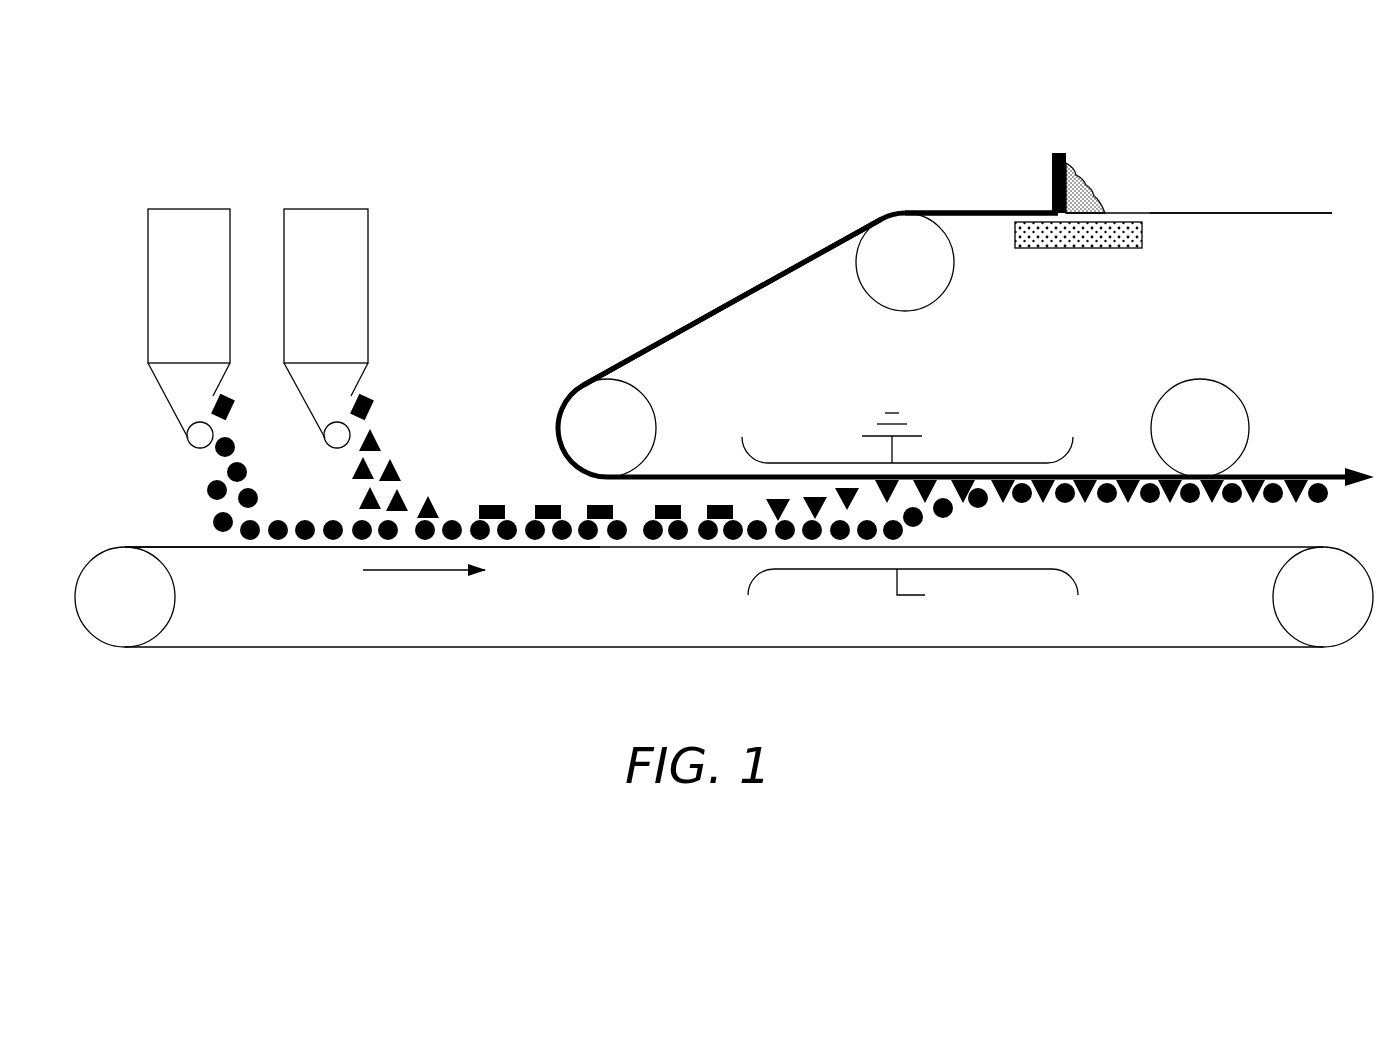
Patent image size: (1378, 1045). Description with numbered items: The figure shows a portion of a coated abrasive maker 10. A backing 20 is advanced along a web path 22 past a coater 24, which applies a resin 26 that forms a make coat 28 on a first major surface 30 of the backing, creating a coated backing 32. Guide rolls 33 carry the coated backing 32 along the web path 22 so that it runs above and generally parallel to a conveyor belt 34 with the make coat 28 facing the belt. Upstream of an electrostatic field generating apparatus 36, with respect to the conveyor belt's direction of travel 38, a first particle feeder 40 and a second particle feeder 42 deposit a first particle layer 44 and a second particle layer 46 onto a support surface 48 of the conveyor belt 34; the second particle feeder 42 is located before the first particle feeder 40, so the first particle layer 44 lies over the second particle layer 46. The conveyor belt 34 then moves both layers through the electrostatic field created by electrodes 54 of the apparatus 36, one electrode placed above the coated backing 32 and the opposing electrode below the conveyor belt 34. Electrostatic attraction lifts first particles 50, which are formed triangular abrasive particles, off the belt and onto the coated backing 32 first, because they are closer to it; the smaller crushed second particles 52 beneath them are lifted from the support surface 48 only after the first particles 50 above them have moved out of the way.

The coated abrasive maker 10 is at (416, 98).
The backing 20 is at (1305, 211).
The web path 22 is at (752, 268).
The coater 24 is at (1059, 152).
The resin 26 is at (1082, 194).
The make coat 28 is at (975, 209).
The first major surface 30 is at (1208, 211).
The coated backing 32 is at (671, 332).
The guide rolls 33 is at (591, 445).
The conveyor belt 34 is at (236, 648).
The electrostatic field generating apparatus 36 is at (806, 447).
The direction of travel 38 is at (426, 572).
The first particle feeder 40 is at (329, 220).
The second particle feeder 42 is at (189, 220).
The first particle layer 44 is at (522, 494).
The second particle layer 46 is at (315, 502).
The support surface 48 is at (176, 545).
The first particles 50 is at (400, 472).
The second particles 52 is at (240, 466).
The electrodes 54 is at (1062, 461).